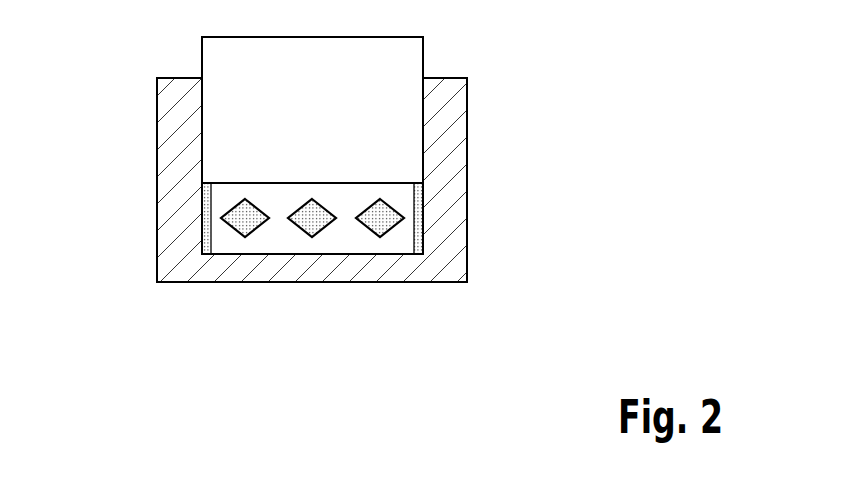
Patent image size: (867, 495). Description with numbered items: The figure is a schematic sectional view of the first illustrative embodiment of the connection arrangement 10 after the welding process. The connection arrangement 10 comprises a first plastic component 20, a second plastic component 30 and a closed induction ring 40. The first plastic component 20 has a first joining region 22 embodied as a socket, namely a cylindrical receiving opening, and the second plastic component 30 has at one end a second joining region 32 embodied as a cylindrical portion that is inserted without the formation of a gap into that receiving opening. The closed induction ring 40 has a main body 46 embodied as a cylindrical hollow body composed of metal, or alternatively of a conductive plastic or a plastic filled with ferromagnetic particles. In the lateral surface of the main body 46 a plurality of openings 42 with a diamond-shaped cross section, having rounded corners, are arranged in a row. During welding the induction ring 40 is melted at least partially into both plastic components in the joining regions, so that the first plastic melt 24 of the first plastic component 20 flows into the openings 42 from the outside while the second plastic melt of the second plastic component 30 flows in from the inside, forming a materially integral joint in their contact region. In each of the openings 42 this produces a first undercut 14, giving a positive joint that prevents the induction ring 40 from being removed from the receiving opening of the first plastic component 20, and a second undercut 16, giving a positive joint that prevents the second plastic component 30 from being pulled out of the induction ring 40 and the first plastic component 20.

The connection arrangement 10 is at (176, 196).
The first undercut 14 is at (378, 232).
The second undercut 16 is at (384, 213).
The first plastic component 20 is at (460, 236).
The first joining region 22 is at (219, 172).
The first plastic melt 24 is at (312, 230).
The second plastic component 30 is at (423, 45).
The second joining region 32 is at (423, 153).
The closed induction ring 40 is at (418, 305).
The openings 42 is at (238, 232).
The main body 46 is at (205, 222).